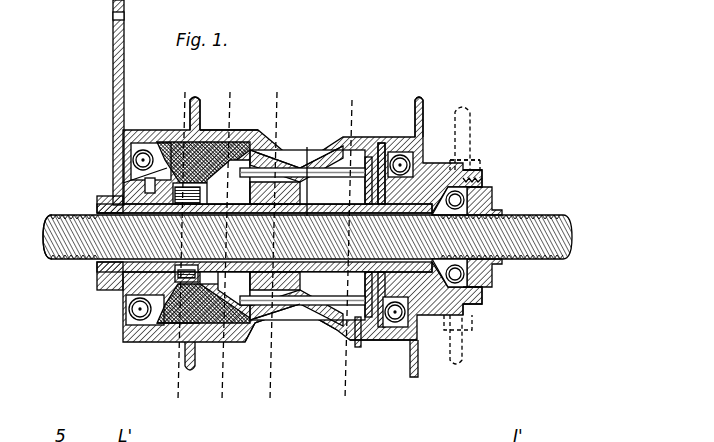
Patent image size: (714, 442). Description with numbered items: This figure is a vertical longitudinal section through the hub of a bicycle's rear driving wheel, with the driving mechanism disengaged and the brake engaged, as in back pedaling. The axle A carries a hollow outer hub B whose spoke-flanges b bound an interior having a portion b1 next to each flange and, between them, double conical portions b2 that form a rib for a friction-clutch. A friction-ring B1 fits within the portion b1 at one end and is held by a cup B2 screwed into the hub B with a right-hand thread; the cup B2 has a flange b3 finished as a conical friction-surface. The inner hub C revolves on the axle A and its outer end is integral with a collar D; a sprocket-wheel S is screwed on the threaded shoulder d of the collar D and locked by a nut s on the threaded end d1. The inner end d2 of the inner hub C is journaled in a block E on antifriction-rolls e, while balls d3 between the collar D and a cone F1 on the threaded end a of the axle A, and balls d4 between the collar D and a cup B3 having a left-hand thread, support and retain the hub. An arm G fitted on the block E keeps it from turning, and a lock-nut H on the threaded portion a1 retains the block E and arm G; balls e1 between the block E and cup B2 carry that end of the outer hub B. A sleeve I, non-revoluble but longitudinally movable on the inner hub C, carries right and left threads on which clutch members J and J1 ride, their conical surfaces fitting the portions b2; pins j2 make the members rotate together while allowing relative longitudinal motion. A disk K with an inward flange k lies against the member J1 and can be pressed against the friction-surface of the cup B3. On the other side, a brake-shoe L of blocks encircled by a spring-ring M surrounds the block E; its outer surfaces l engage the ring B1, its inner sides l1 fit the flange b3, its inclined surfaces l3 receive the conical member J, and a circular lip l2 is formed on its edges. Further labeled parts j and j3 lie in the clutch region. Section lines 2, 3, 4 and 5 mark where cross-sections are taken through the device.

The lever or arm G is at (113, 88).
The hollow outer hub B is at (368, 137).
The spoke-flanges b is at (196, 98).
The portion adjacent to spoke-flange b1 is at (396, 138).
The conical portions b2 is at (292, 320).
The flange of cup b3 is at (131, 155).
The spring-ring M is at (180, 134).
The brake-shoe L is at (215, 131).
The inner end of inner hub d2 is at (215, 182).
The sleeve j is at (322, 152).
The pins j2 is at (360, 156).
The sleeve wedge j3 is at (258, 140).
The sleeve I is at (302, 168).
The threaded end of collar d1 is at (484, 184).
The nut s is at (482, 176).
The sprocket-wheel S is at (463, 132).
The threaded end of axle a is at (470, 160).
The collar nut F1 is at (502, 275).
The lock-nut H is at (97, 264).
The block E is at (168, 280).
The inner sides of brake-blocks l1 is at (124, 183).
The axle A is at (307, 237).
The inner hub C is at (264, 231).
The threaded portion of axle a1 is at (44, 238).
The collar D is at (302, 302).
The balls e1 is at (130, 320).
The cup B2 is at (150, 343).
The antifriction-rolls e is at (178, 290).
The inclined surfaces of brake-blocks l3 is at (248, 320).
The clutch member J is at (257, 320).
The circular lip l2 is at (251, 330).
The outer surfaces of brake-blocks l is at (170, 343).
The friction-ring B1 is at (200, 364).
The threaded shoulder of collar d is at (395, 312).
The inward flange of disk k is at (359, 348).
The friction-disk K is at (413, 365).
The clutch member J1 is at (383, 382).
The balls d3 is at (482, 300).
The balls d4 is at (455, 328).
The cup B3 is at (458, 364).
The section line 2 2 is at (177, 236).
The section line 3 3 is at (223, 237).
The section line 4 4 is at (270, 238).
The section line 5 5 is at (348, 241).